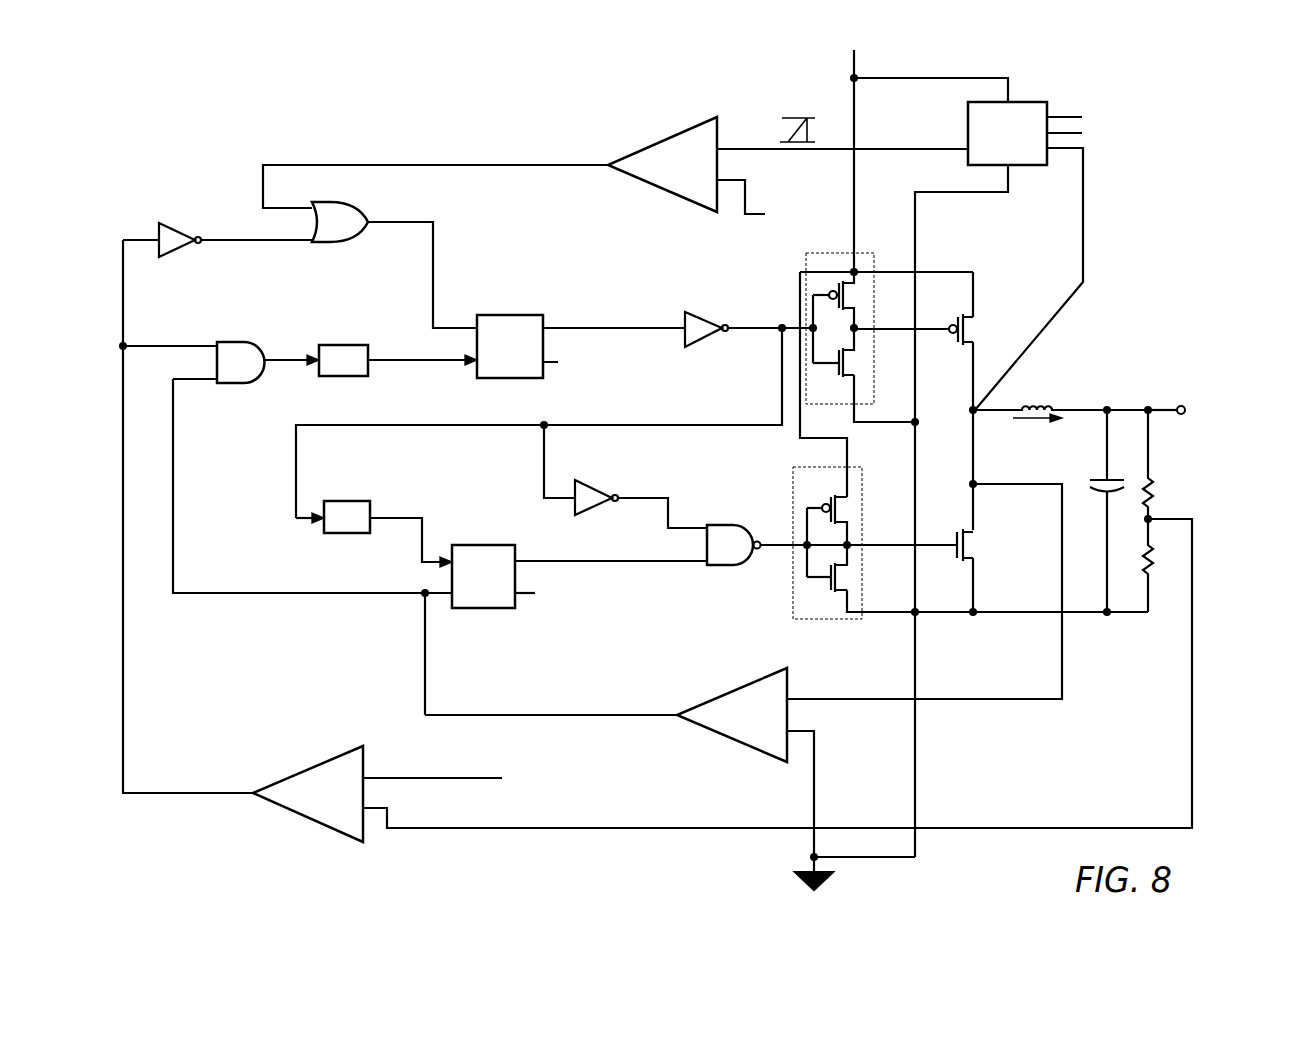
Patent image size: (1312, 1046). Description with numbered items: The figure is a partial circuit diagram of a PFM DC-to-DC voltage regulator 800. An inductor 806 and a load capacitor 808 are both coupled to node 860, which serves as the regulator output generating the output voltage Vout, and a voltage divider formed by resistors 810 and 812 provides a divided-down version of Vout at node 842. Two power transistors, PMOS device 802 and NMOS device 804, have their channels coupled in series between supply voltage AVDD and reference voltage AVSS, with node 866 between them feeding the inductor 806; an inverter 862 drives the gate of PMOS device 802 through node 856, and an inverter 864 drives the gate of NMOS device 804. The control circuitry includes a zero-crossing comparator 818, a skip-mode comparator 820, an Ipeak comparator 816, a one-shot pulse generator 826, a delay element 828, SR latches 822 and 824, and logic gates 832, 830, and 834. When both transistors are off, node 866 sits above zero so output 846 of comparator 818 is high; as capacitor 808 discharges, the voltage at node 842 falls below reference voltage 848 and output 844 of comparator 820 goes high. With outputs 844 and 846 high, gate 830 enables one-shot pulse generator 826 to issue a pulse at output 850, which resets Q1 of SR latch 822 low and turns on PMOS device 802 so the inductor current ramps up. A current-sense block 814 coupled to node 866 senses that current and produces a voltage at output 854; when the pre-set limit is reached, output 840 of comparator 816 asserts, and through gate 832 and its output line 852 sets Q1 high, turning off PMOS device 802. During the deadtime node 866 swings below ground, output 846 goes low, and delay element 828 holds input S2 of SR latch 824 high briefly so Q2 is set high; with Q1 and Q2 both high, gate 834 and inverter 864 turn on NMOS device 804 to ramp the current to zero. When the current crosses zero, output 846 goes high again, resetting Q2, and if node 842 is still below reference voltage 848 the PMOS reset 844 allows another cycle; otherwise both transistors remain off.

The PFM DC-to-DC voltage regulator 800 is at (152, 128).
The PMOS device 802 is at (975, 330).
The NMOS device 804 is at (975, 545).
The inductor 806 is at (1054, 406).
The load capacitor 808 is at (1093, 478).
The resistor 810 is at (1153, 488).
The resistor 812 is at (1152, 566).
The current-sense block 814 is at (968, 120).
The Ipeak comparator 816 is at (720, 163).
The zero-crossing comparator 818 is at (790, 670).
The skip-mode comparator 820 is at (335, 794).
The SR latch 822 is at (545, 343).
The SR latch 824 is at (518, 572).
The one-shot pulse generator 826 is at (325, 345).
The delay element 828 is at (372, 503).
The AND gate 830 is at (215, 357).
The logic gate 832 is at (311, 222).
The logic gate 834 is at (706, 540).
The output of comparator 816 840 is at (553, 160).
The node 842 is at (1150, 521).
The output of comparator 820 (PMOS reset) 844 is at (177, 793).
The output of comparator 818 846 is at (622, 713).
The reference voltage 848 is at (453, 782).
The output of one-shot pulse generator 850 is at (410, 364).
The OR gate output line 852 is at (433, 275).
The output of current-sense block 854 is at (735, 148).
The node 856 is at (930, 329).
The node 860 is at (1107, 406).
The inverter 862 is at (806, 262).
The inverter 864 is at (793, 472).
The node 866 is at (978, 415).